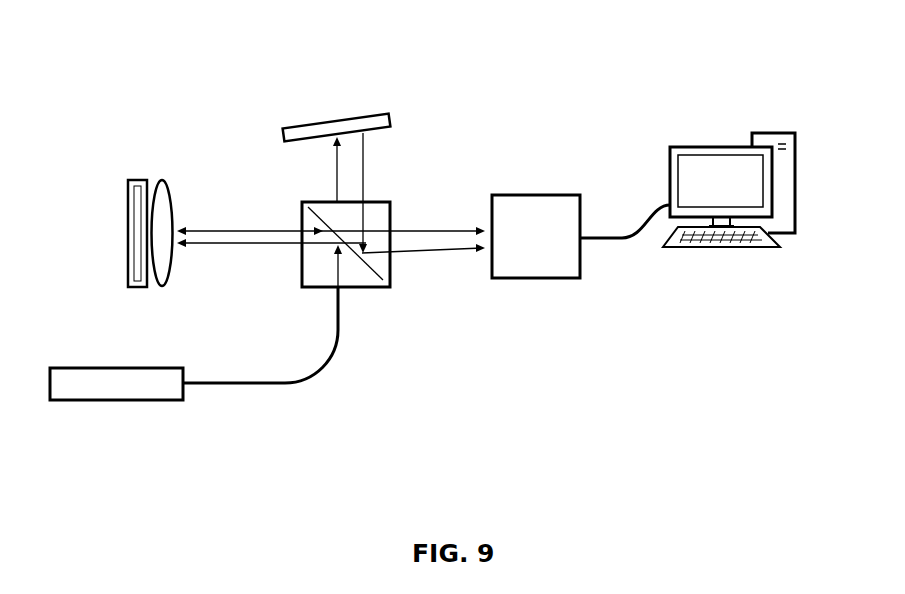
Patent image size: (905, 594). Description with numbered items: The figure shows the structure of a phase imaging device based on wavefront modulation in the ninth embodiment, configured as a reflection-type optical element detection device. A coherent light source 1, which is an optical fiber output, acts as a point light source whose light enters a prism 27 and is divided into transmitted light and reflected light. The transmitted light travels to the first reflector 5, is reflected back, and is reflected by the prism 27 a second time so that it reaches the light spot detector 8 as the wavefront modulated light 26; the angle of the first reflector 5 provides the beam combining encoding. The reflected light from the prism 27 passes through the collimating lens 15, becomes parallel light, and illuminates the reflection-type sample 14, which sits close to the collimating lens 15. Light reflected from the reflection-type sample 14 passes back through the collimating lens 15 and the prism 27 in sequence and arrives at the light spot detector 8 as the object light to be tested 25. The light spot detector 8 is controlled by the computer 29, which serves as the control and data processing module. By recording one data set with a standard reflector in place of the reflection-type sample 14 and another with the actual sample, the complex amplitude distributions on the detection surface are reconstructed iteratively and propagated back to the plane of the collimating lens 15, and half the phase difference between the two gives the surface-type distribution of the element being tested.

The coherent light source 1 is at (88, 382).
The first reflector 5 is at (323, 132).
The light spot detector 8 is at (542, 258).
The reflection-type sample 14 is at (132, 180).
The collimating lens 15 is at (165, 180).
The object light to be tested 25 is at (443, 223).
The wavefront modulated light 26 is at (437, 253).
The prism 27 is at (358, 275).
The computer 29 is at (708, 145).